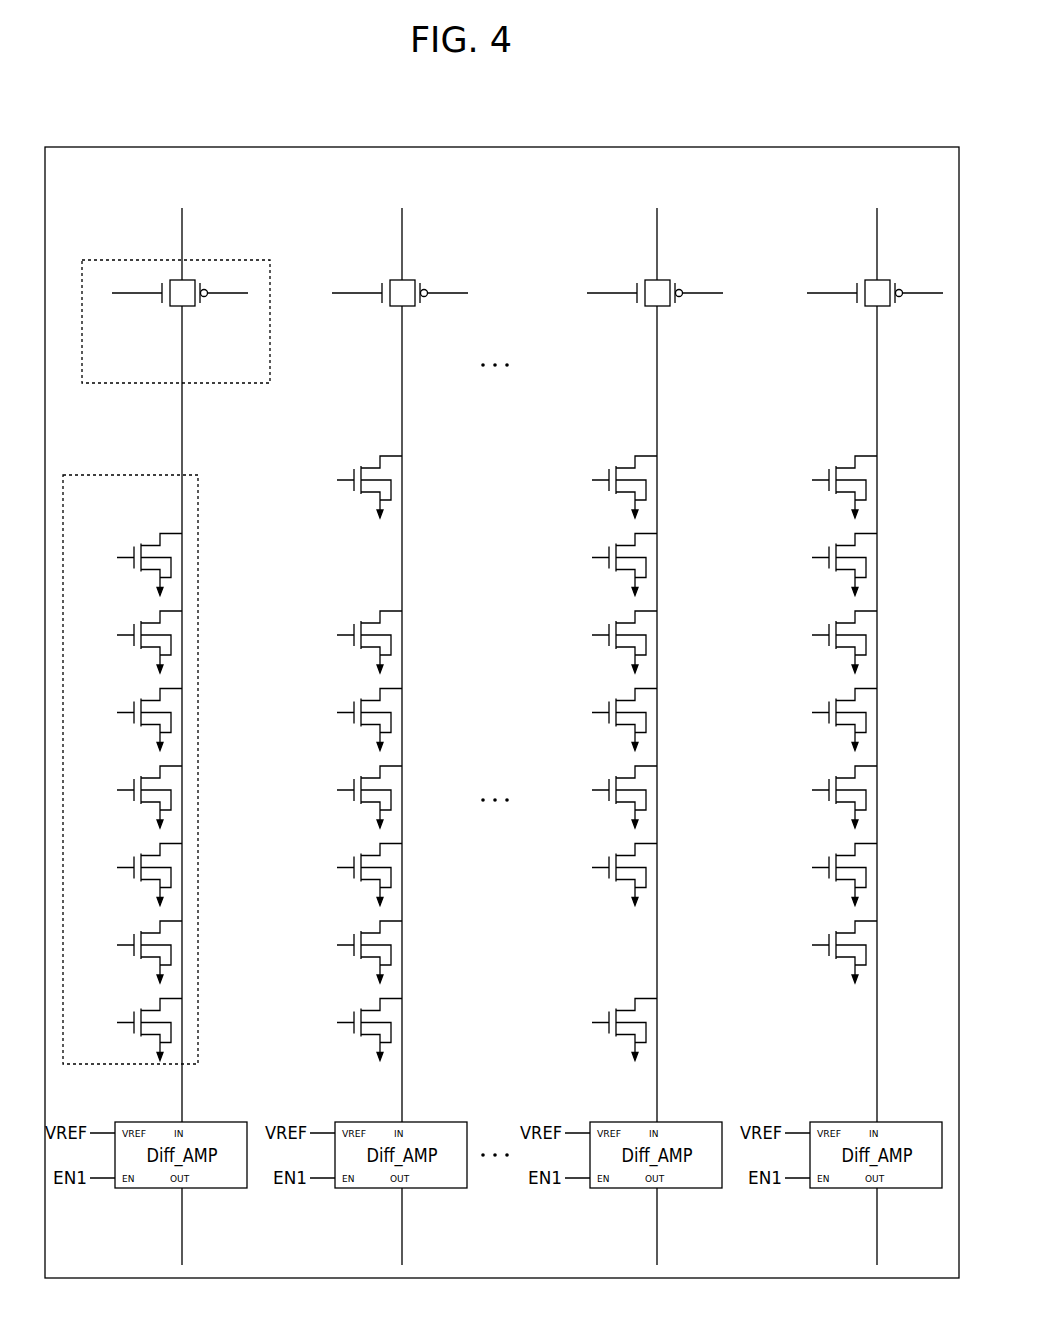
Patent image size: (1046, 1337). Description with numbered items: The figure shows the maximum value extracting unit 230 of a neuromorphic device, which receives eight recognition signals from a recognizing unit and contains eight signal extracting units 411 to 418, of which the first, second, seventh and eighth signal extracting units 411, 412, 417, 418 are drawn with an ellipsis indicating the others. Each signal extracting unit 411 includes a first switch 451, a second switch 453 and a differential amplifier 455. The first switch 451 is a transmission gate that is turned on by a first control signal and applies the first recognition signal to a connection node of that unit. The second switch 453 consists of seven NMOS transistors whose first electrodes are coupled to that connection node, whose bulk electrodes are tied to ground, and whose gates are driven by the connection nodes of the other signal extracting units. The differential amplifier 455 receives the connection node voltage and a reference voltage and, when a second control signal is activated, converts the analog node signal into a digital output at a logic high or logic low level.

The maximum value extracting unit 230 is at (884, 147).
The signal extracting unit 411 is at (177, 720).
The signal extracting unit 412 is at (373, 720).
The signal extracting unit 417 is at (628, 720).
The signal extracting unit 418 is at (848, 720).
The first switch 451 is at (243, 259).
The second switch 453 is at (201, 484).
The differential amplifier 455 is at (218, 1122).